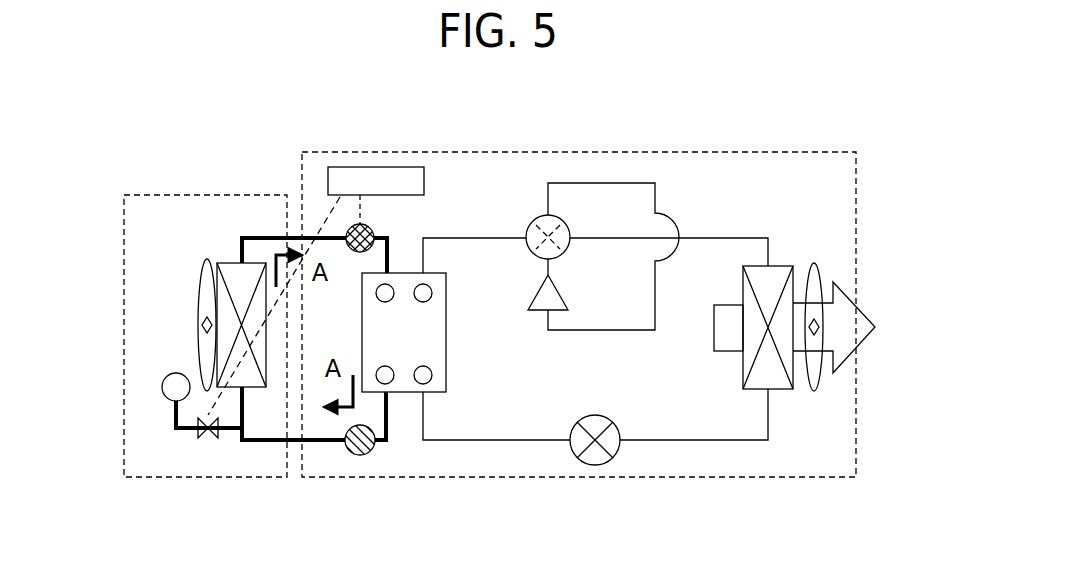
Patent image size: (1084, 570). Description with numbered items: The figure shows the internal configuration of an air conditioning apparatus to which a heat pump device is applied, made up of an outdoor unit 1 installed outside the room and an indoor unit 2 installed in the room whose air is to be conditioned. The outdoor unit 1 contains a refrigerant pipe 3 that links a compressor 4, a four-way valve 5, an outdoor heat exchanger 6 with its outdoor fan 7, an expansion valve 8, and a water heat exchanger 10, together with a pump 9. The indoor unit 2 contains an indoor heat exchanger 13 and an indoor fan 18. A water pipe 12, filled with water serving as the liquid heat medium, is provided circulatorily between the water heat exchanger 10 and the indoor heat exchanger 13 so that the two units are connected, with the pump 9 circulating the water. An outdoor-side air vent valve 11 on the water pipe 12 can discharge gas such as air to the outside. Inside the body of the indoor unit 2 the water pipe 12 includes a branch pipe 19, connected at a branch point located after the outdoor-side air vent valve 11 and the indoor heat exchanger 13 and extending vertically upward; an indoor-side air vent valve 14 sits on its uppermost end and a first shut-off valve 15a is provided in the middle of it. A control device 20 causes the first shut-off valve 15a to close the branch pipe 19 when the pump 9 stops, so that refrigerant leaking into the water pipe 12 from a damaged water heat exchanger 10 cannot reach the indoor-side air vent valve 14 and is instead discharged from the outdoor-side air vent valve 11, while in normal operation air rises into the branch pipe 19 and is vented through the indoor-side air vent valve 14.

The outdoor unit 1 is at (791, 152).
The indoor unit 2 is at (175, 195).
The refrigerant pipe 3 is at (718, 238).
The compressor 4 is at (530, 290).
The four-way valve 5 is at (535, 218).
The outdoor heat exchanger 6 is at (790, 262).
The outdoor fan 7 is at (816, 262).
The expansion valve 8 is at (595, 415).
The pump 9 is at (372, 232).
The water heat exchanger 10 is at (447, 333).
The outdoor-side air vent valve 11 is at (353, 455).
The water pipe 12 is at (300, 445).
The indoor heat exchanger 13 is at (222, 262).
The indoor-side air vent valve 14 is at (172, 374).
The first shut-off valve 15a is at (208, 443).
The indoor fan 18 is at (198, 300).
The branch pipe 19 is at (176, 434).
The control device 20 is at (426, 182).